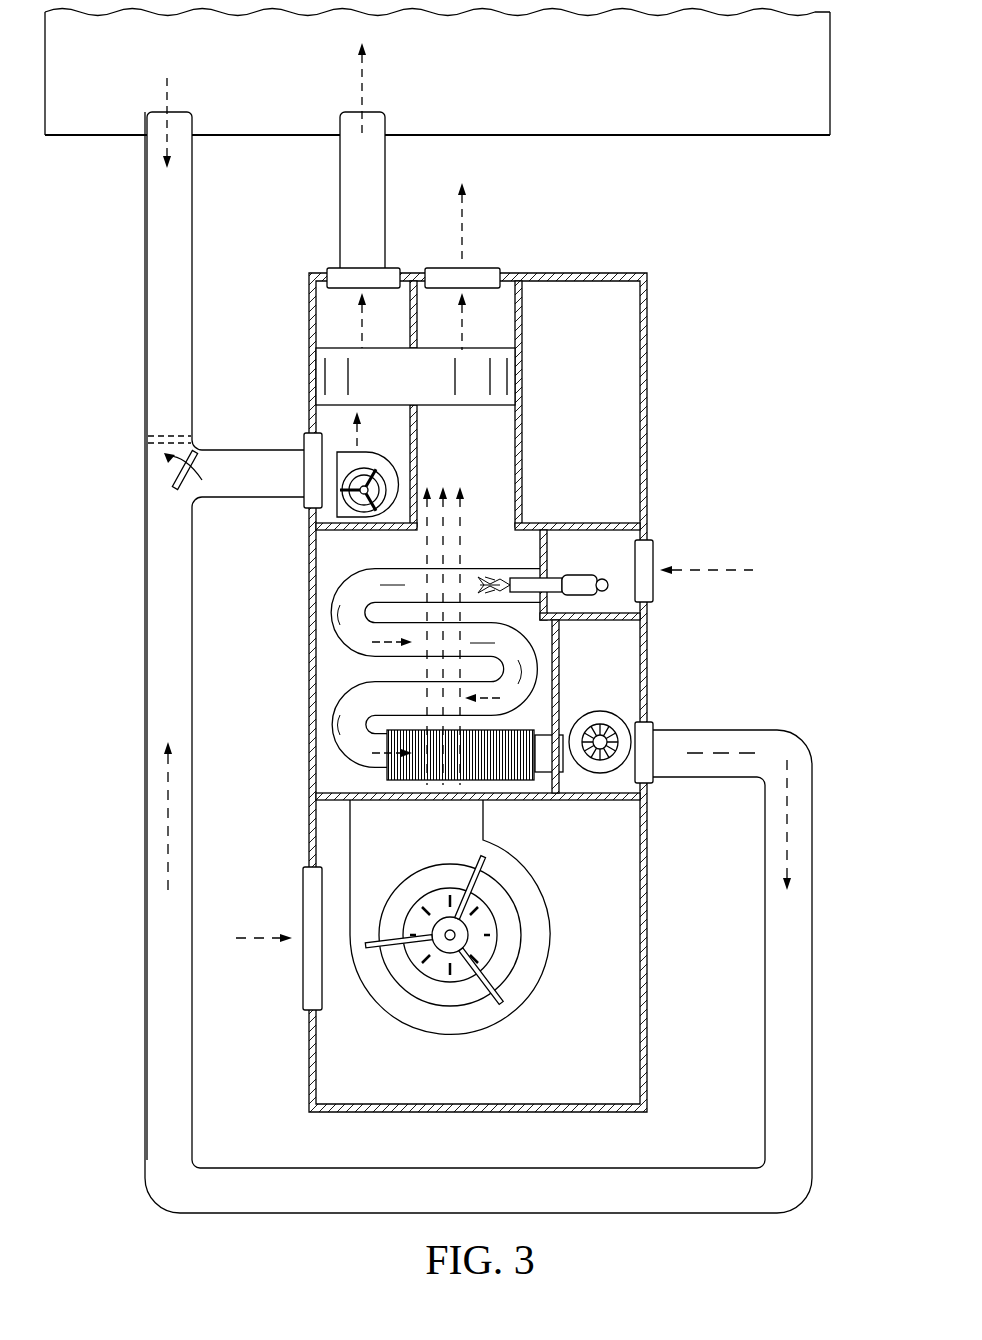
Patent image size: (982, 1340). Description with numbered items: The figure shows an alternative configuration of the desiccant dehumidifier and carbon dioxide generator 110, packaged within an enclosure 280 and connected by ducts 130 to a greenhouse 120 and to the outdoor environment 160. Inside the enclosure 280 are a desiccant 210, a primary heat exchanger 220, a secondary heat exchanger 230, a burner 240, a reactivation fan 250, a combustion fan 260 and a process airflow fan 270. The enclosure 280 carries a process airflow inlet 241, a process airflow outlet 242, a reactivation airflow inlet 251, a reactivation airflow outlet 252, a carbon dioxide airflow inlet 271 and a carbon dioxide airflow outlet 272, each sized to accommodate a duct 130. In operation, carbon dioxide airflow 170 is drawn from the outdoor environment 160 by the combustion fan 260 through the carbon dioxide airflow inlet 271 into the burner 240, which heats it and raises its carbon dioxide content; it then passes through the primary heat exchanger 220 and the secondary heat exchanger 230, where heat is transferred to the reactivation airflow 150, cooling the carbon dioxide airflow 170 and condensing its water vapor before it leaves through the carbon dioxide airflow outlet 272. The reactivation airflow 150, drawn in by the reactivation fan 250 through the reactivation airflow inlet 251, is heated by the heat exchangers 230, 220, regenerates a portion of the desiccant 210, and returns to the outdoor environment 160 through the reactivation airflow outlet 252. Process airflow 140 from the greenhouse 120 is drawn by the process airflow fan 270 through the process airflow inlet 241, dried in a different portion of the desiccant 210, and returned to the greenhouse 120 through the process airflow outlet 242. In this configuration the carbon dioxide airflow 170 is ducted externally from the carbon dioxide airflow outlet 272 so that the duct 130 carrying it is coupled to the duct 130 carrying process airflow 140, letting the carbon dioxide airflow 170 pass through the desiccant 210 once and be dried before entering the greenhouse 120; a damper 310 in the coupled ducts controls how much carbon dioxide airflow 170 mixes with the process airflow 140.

The desiccant dehumidifier and carbon dioxide generator 110 is at (628, 274).
The greenhouse 120 is at (491, 92).
The duct 130 is at (340, 192).
The process airflow 140 is at (165, 95).
The reactivation airflow 150 is at (465, 226).
The outdoor environment 160 is at (44, 398).
The carbon dioxide airflow 170 is at (688, 572).
The desiccant 210 is at (390, 393).
The primary heat exchanger 220 is at (333, 598).
The secondary heat exchanger 230 is at (530, 782).
The burner 240 is at (580, 597).
The process airflow inlet 241 is at (303, 503).
The process airflow outlet 242 is at (326, 271).
The reactivation fan 250 is at (450, 1040).
The reactivation airflow inlet 251 is at (303, 890).
The reactivation airflow outlet 252 is at (448, 268).
The combustion fan 260 is at (598, 774).
The process airflow fan 270 is at (402, 478).
The carbon dioxide airflow inlet 271 is at (655, 548).
The carbon dioxide airflow outlet 272 is at (655, 728).
The enclosure 280 is at (303, 766).
The damper 310 is at (178, 503).